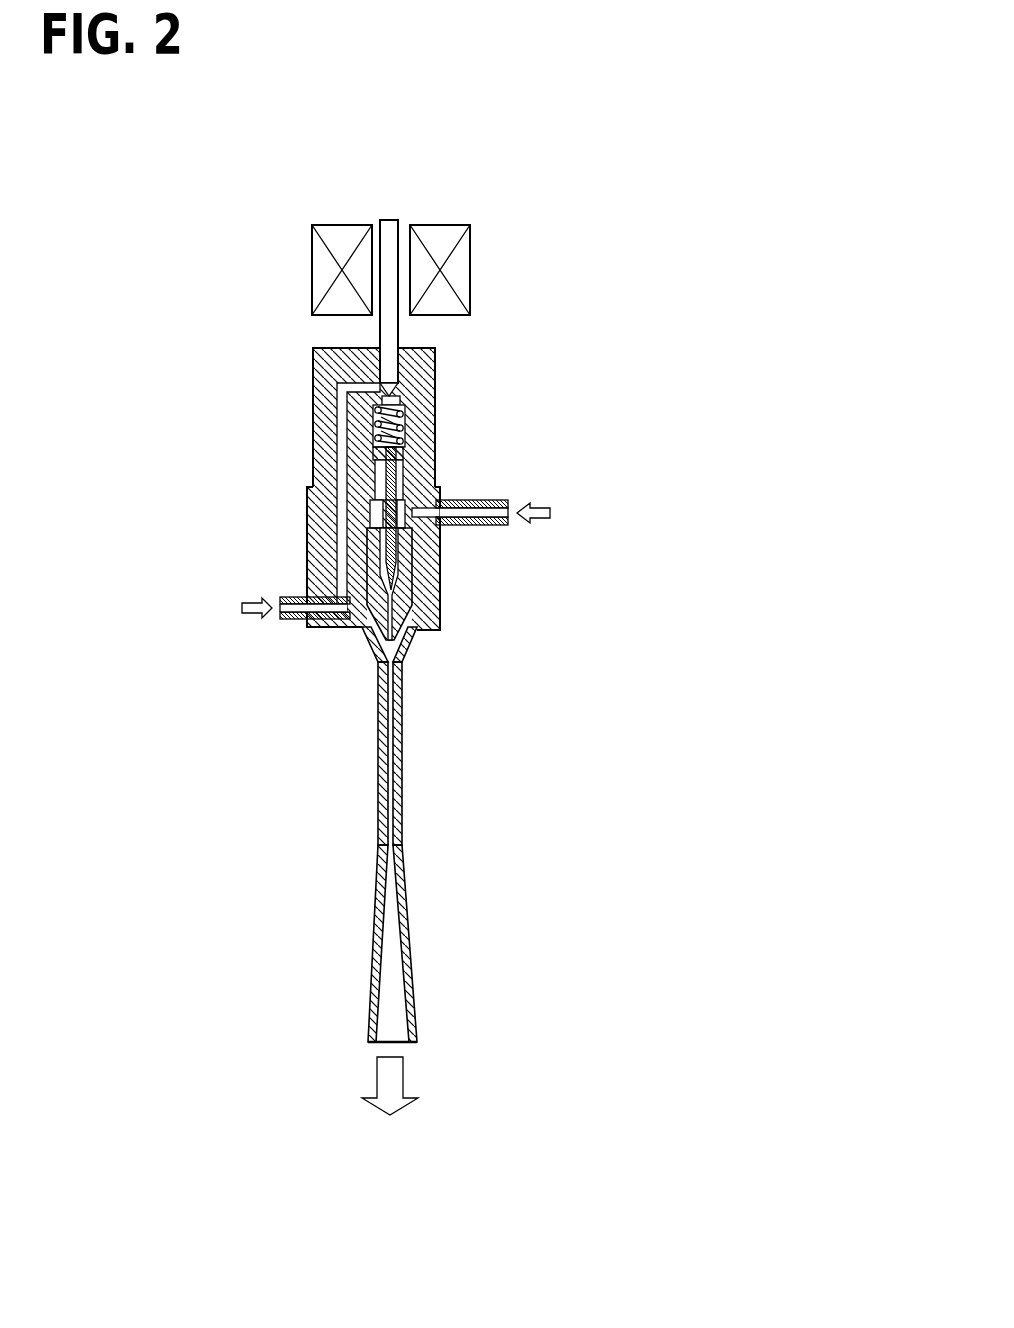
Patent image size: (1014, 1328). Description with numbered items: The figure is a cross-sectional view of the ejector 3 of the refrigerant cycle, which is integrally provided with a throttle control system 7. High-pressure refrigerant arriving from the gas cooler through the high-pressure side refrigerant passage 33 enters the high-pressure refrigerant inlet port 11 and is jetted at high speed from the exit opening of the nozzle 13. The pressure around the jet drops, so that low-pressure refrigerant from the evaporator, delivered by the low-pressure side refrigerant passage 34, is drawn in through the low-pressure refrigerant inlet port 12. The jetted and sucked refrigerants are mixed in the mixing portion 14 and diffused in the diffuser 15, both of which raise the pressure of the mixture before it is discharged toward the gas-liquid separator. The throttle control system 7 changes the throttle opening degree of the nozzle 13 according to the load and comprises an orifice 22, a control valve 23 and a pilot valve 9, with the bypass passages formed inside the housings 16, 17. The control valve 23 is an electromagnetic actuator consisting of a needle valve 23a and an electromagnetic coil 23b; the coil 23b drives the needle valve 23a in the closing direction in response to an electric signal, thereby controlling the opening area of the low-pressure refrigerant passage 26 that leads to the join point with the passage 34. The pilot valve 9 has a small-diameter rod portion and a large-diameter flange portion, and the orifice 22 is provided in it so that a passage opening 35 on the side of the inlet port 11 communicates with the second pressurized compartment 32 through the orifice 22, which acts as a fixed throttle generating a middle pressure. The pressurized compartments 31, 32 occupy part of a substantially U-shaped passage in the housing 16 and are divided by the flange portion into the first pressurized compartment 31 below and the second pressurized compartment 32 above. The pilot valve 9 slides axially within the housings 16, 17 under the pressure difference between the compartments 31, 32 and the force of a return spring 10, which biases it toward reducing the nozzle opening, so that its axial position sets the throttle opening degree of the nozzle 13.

The ejector 3 is at (375, 928).
The throttle control system 7 is at (278, 237).
The pilot valve 9 is at (398, 570).
The return spring 10 is at (403, 422).
The high-pressure refrigerant inlet port 11 is at (445, 502).
The low-pressure refrigerant inlet port 12 is at (362, 630).
The nozzle 13 is at (410, 640).
The mixing portion 14 is at (390, 748).
The diffuser 15 is at (398, 995).
The housing 16 is at (318, 372).
The housing 17 is at (313, 580).
The orifice 22 is at (400, 452).
The control valve 23 is at (571, 227).
The needle valve 23a is at (393, 333).
The electromagnetic coil 23b is at (463, 264).
The low-pressure refrigerant passage 26 is at (340, 432).
The first pressurized compartment 31 is at (378, 473).
The second pressurized compartment 32 is at (400, 398).
The high-pressure side refrigerant passage 33 is at (492, 527).
The low-pressure side refrigerant passage 34 is at (288, 620).
The passage opening 35 is at (376, 518).